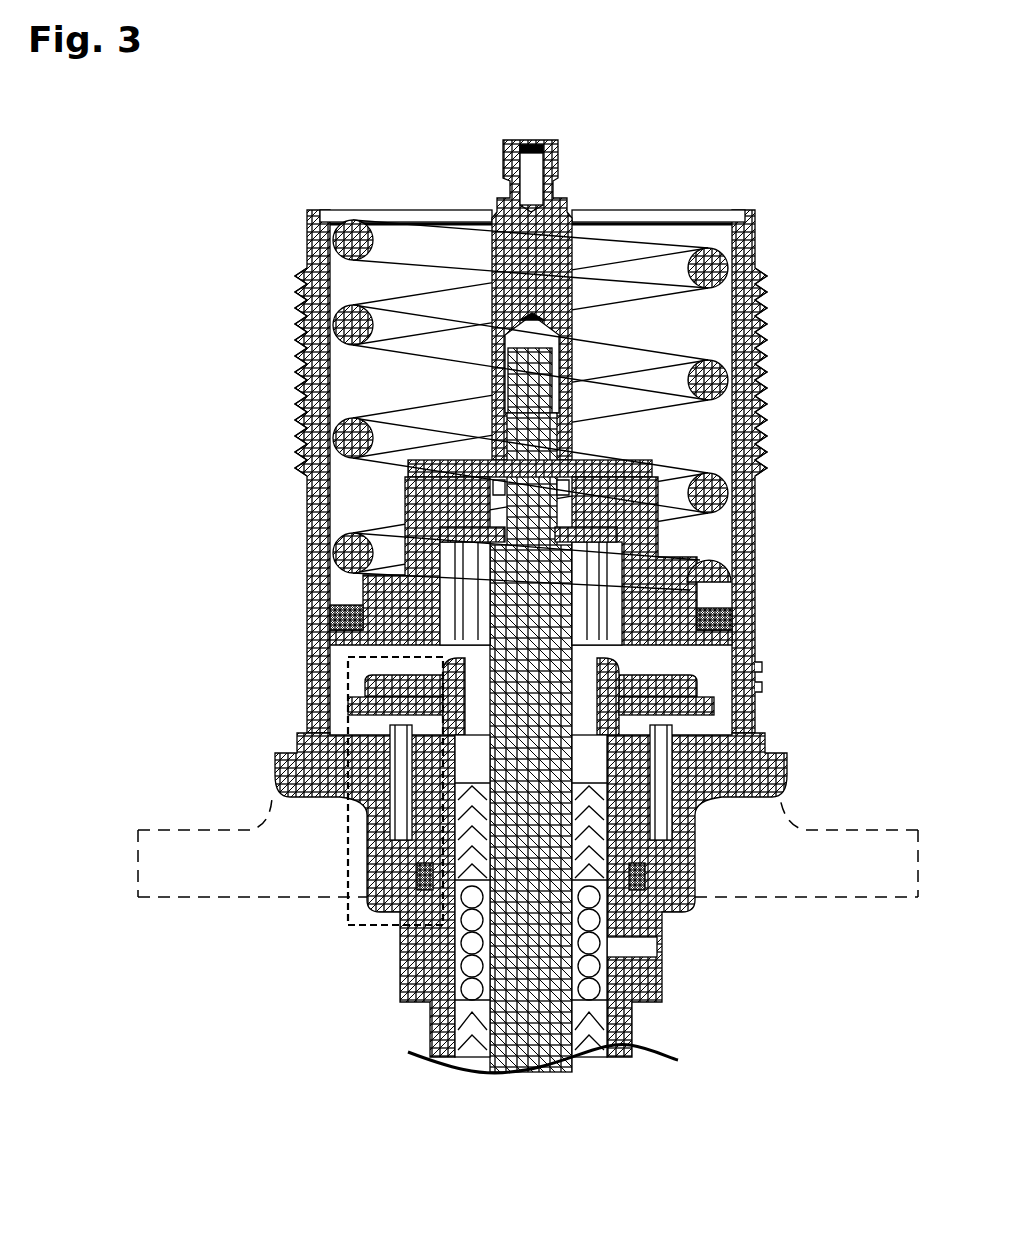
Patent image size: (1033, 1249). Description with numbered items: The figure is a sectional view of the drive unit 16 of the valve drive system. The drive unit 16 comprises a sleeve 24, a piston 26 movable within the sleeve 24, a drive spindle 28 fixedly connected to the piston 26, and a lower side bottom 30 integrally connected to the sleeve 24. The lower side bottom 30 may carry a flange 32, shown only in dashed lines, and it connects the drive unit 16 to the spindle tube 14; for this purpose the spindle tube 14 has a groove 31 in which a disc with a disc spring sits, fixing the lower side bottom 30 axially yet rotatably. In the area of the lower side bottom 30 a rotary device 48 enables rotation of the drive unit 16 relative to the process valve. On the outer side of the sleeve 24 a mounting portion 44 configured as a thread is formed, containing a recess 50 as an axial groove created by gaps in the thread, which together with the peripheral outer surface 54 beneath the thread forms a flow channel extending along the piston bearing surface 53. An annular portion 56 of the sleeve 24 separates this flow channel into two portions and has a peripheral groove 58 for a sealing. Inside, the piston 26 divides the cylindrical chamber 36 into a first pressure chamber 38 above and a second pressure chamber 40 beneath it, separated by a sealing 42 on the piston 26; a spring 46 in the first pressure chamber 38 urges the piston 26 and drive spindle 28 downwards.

The spindle tube 14 is at (418, 963).
The drive unit 16 is at (781, 200).
The sleeve 24 is at (315, 500).
The piston 26 is at (345, 615).
The drive spindle 28 is at (522, 1025).
The lower side bottom 30 is at (378, 848).
The groove 31 is at (705, 712).
The flange 32 is at (767, 872).
The cylindrical chamber 36 is at (690, 330).
The first pressure chamber 38 is at (700, 440).
The second pressure chamber 40 is at (690, 678).
The sealing 42 is at (723, 620).
The mounting portion 44 is at (298, 367).
The spring 46 is at (382, 343).
The rotary device 48 is at (345, 690).
The recess 50 is at (762, 283).
The piston bearing surface 53 is at (700, 382).
The peripheral outer surface 54 is at (755, 512).
The annular portion 56 is at (762, 668).
The peripheral groove 58 is at (762, 688).